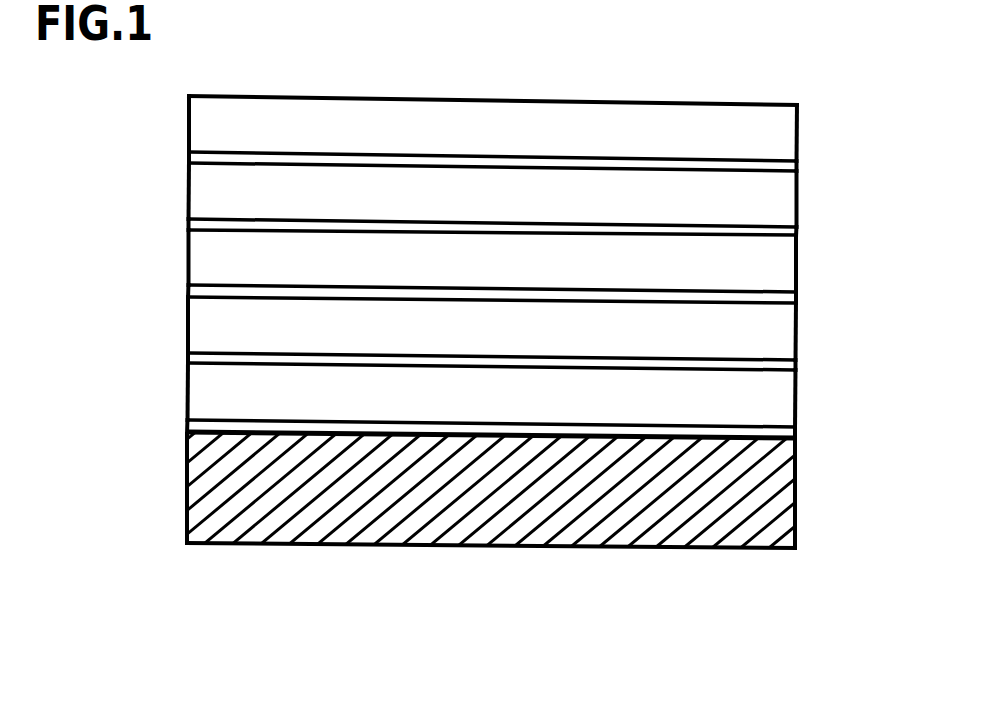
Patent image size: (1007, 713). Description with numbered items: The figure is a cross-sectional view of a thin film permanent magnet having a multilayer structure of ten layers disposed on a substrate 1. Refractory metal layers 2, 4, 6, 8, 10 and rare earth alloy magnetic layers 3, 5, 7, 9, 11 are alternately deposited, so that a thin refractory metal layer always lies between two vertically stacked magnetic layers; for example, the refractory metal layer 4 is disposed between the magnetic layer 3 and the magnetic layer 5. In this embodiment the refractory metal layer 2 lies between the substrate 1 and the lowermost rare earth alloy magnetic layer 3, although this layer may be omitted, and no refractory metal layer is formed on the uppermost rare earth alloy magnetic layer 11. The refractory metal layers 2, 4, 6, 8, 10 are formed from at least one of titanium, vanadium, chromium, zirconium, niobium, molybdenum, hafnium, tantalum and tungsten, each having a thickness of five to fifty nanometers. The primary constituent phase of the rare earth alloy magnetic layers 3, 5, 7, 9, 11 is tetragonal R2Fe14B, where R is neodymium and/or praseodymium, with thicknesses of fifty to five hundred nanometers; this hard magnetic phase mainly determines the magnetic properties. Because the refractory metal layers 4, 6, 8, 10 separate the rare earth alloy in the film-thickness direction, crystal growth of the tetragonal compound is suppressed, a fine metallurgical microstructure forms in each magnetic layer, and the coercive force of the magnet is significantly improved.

The substrate 1 is at (777, 505).
The refractory metal layer 2 is at (205, 428).
The rare earth alloy magnetic layer 3 is at (777, 408).
The refractory metal layer 4 is at (205, 358).
The rare earth alloy magnetic layer 5 is at (778, 340).
The refractory metal layer 6 is at (205, 290).
The rare earth alloy magnetic layer 7 is at (778, 270).
The refractory metal layer 8 is at (205, 228).
The rare earth alloy magnetic layer 9 is at (780, 202).
The refractory metal layer 10 is at (205, 160).
The rare earth alloy magnetic layer 11 is at (770, 137).